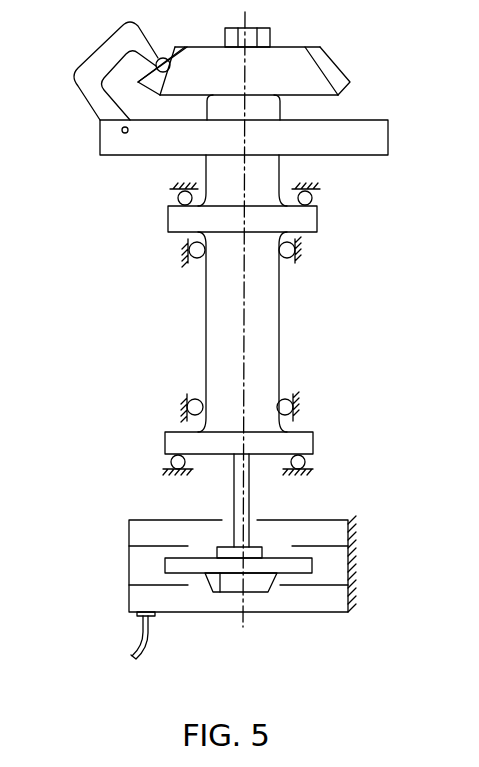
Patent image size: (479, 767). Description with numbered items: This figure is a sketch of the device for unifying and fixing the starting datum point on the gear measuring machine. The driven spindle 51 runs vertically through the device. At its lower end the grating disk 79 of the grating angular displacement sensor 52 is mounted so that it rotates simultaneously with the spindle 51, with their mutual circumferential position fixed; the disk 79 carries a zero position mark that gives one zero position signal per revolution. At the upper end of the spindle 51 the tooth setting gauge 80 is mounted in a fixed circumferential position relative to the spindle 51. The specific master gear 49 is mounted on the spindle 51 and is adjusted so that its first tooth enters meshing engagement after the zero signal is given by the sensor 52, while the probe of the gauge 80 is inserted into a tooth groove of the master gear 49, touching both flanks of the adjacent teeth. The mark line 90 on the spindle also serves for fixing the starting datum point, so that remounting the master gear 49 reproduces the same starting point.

The specific master gear 49 is at (308, 73).
The tooth setting gauge 80 is at (107, 53).
The driven spindle 51 is at (263, 322).
The grating angular displacement sensor 52 is at (148, 525).
The grating disk 79 is at (270, 568).
The mark line 90 is at (218, 583).